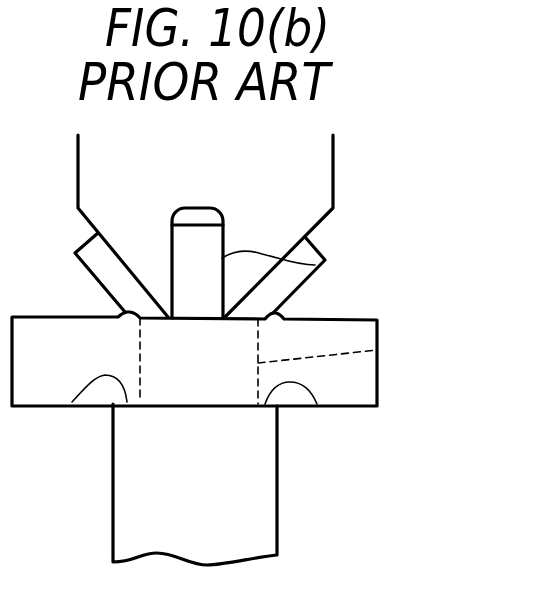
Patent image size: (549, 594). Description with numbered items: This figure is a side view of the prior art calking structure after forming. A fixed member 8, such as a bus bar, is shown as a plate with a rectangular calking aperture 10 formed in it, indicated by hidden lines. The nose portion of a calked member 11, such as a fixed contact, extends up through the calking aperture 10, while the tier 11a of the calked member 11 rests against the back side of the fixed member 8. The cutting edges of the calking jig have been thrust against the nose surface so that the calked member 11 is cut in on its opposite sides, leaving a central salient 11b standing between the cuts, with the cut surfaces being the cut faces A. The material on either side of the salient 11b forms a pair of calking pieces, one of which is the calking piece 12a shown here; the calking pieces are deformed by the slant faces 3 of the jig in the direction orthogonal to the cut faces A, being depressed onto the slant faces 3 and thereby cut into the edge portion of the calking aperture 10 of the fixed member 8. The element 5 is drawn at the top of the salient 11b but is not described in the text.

The slant face 3 is at (83, 216).
The pin 5 is at (200, 207).
The fixed member 8 is at (363, 385).
The calking aperture 10 is at (377, 350).
The calked member 11 is at (262, 532).
The tier 11a is at (80, 393).
The salient 11b is at (207, 238).
The calking piece 12a is at (98, 260).
The cut face A is at (172, 242).